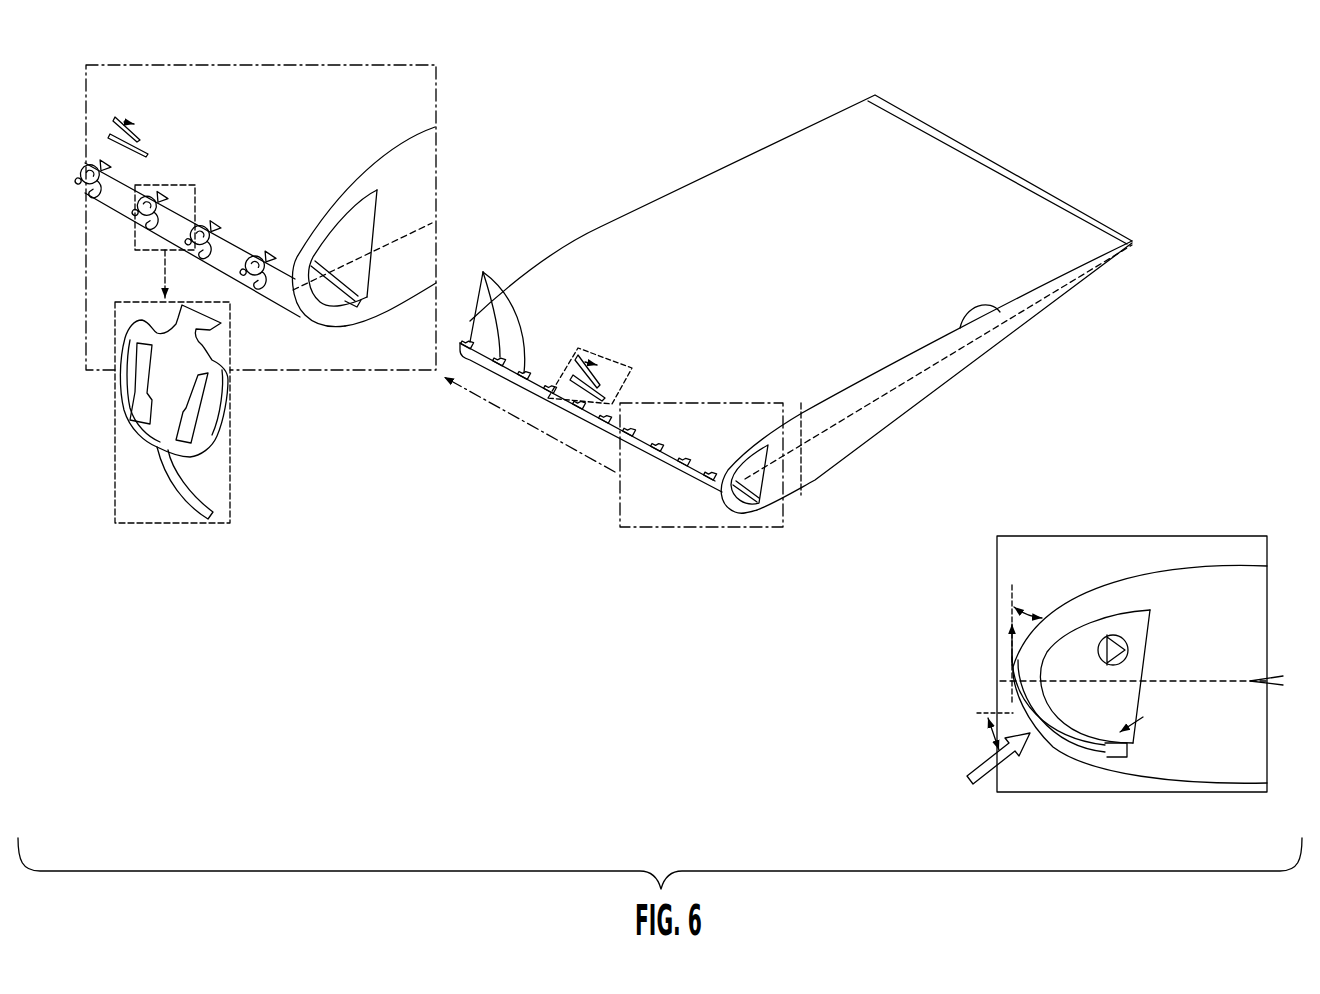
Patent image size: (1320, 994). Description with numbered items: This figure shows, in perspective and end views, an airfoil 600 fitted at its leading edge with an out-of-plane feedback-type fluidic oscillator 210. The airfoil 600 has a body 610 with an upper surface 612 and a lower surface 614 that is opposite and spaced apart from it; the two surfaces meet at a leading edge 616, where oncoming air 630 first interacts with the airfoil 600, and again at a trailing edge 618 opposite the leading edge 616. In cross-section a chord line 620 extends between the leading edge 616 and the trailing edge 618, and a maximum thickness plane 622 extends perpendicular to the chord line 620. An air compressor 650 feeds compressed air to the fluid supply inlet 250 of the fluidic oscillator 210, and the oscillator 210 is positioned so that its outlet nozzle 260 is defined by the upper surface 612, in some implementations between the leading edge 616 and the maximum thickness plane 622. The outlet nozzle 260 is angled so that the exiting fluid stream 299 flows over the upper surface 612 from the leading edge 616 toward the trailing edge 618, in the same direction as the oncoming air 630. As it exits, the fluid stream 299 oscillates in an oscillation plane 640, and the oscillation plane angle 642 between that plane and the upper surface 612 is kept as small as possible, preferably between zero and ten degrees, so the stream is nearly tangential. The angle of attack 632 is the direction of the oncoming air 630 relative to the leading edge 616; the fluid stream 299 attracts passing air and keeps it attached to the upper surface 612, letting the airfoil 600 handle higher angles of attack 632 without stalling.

The airfoil 600 is at (364, 43).
The body 610 is at (418, 180).
The upper surface 612 is at (388, 97).
The lower surface 614 is at (388, 306).
The leading edge 616 is at (286, 298).
The trailing edge 618 is at (1134, 243).
The chord line 620 is at (414, 227).
The maximum thickness plane 622 is at (801, 494).
The oncoming air 630 is at (1001, 769).
The angle of attack 632 is at (997, 746).
The oscillation plane 640 is at (618, 372).
The oscillation plane angle 642 is at (1030, 610).
The air compressor 650 is at (1105, 636).
The outlet nozzle 260 is at (108, 160).
The fluid stream 299 is at (123, 110).
The out-of-plane feedback-type fluidic oscillator 210 is at (128, 451).
The fluid supply inlet 250 is at (188, 517).